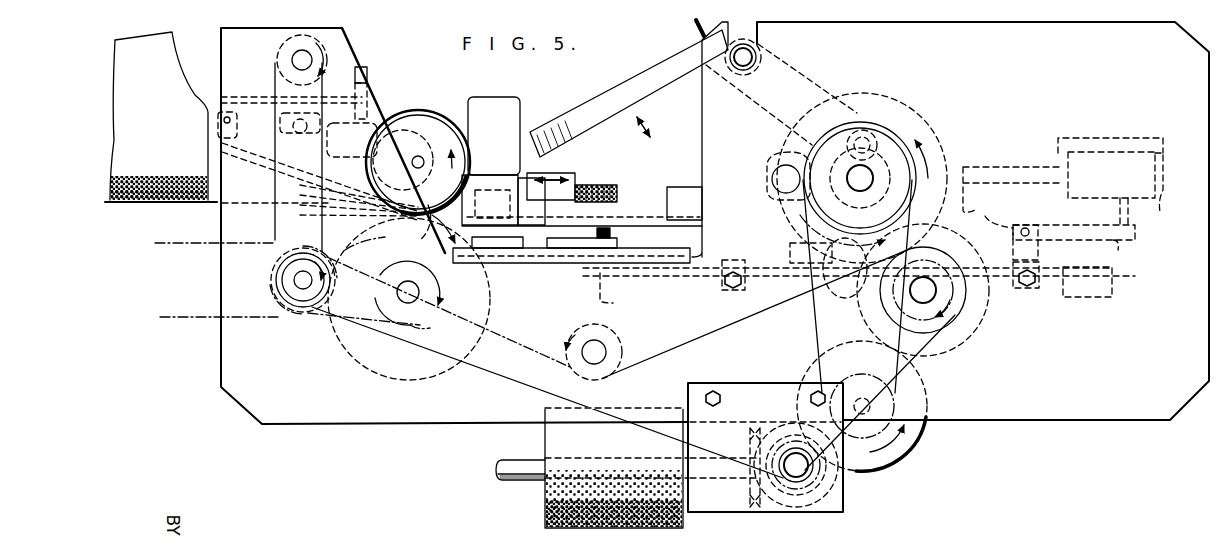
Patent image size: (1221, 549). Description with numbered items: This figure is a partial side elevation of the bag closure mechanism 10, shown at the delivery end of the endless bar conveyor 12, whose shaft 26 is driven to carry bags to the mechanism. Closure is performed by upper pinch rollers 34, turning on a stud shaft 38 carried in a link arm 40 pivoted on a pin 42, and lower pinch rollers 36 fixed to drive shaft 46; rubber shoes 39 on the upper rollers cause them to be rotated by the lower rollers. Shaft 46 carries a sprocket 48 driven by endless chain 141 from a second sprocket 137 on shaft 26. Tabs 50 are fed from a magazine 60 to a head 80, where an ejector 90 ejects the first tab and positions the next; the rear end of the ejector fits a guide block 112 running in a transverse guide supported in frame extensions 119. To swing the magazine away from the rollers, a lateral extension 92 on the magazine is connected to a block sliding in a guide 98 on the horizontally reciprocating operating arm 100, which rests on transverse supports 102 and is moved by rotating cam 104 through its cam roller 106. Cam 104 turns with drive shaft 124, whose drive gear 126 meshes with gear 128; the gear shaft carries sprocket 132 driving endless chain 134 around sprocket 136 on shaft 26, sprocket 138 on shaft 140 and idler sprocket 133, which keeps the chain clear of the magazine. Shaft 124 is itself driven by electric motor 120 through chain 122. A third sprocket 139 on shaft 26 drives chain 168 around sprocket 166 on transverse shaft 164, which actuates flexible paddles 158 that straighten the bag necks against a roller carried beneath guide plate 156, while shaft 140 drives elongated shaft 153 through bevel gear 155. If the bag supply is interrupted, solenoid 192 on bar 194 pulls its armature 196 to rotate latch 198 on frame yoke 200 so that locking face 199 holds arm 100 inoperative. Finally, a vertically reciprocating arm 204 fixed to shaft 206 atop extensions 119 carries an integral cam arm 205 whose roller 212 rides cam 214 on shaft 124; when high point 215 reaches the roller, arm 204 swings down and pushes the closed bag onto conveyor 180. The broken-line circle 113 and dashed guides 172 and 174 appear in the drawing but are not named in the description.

The closure mechanism 10 is at (208, 404).
The endless bar conveyor 12 is at (175, 233).
The shaft 26 is at (300, 283).
The upper pair of pinch rollers 34 is at (441, 132).
The lower pair of pinch rollers 36 is at (496, 310).
The stud shaft 38 is at (413, 165).
The peripheral rim or shoe 39 is at (424, 112).
The link arm 40 is at (328, 152).
The pin 42 is at (288, 148).
The drive shaft 46 is at (407, 289).
The sprocket 48 is at (418, 324).
The tab 50 is at (430, 233).
The magazine 60 is at (524, 87).
The head 80 is at (570, 183).
The ejector 90 is at (642, 210).
The lateral extension 92 is at (614, 236).
The guide 98 is at (583, 273).
The operating arm 100 is at (613, 301).
The transverse supports 102 is at (725, 282).
The cam 104 is at (935, 128).
The cam roller 106 is at (780, 150).
The guide block 112 is at (693, 190).
The cam outline 113 is at (487, 283).
The extensions 119 is at (705, 112).
The electric motor 120 is at (908, 443).
The endless chain 122 is at (812, 333).
The drive shaft 124 is at (855, 175).
The drive gear 126 is at (880, 130).
The cooperating gear 128 is at (986, 304).
The sprocket 132 is at (962, 322).
The idler sprocket 133 is at (585, 333).
The endless chain 134 is at (720, 327).
The sprocket 136 is at (295, 318).
The second sprocket 137 is at (316, 248).
The sprocket 138 is at (832, 490).
The third sprocket 139 is at (269, 272).
The shaft 140 is at (797, 458).
The endless chain 141 is at (381, 236).
The elongated shaft 153 is at (515, 462).
The bevel gear 155 is at (783, 495).
The guide plate 156 is at (152, 203).
The flexible paddles 158 is at (152, 83).
The transverse shaft 164 is at (296, 58).
The sprocket 166 is at (330, 49).
The endless chain 168 is at (274, 90).
The guide 172 is at (270, 172).
The guide 174 is at (268, 205).
The conveyor 180 is at (546, 490).
The solenoid 192 is at (1160, 215).
The bar 194 is at (1058, 142).
The armature 196 is at (1118, 207).
The latch 198 is at (1120, 248).
The locking face 199 is at (985, 216).
The frame yoke 200 is at (1045, 256).
The vertically reciprocating arm 204 is at (622, 103).
The cam arm 205 is at (825, 68).
The shaft 206 is at (752, 57).
The cam roller 212 is at (843, 208).
The cam 214 is at (808, 252).
The high point 215 is at (857, 286).